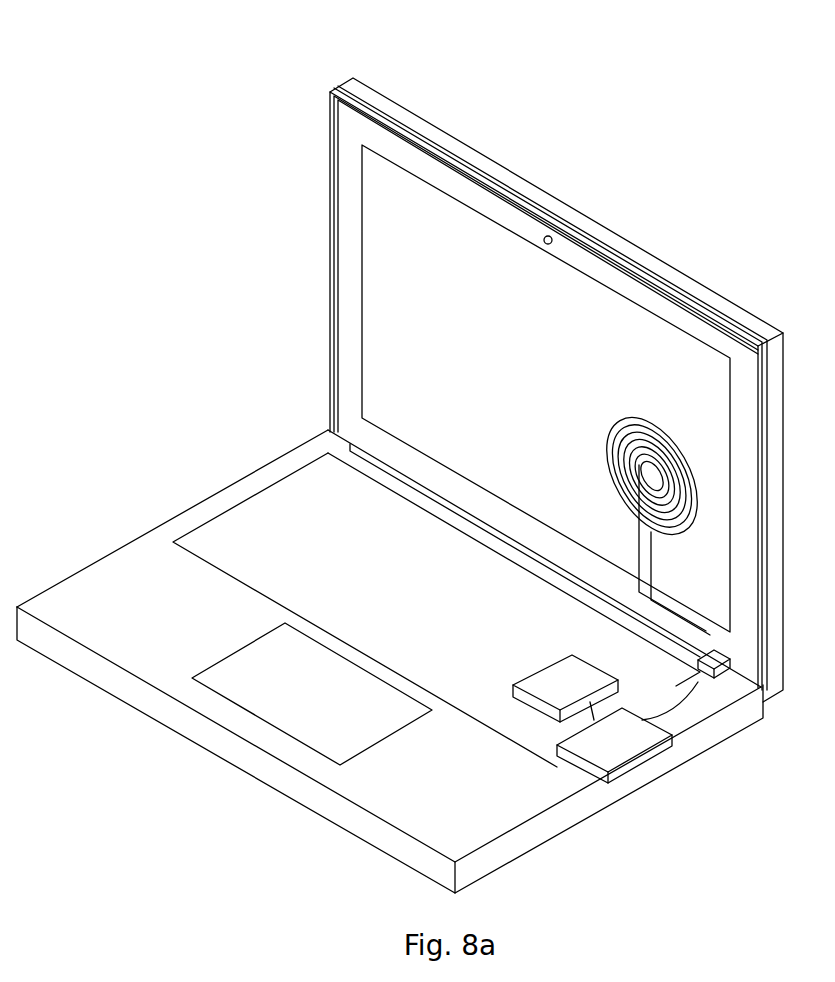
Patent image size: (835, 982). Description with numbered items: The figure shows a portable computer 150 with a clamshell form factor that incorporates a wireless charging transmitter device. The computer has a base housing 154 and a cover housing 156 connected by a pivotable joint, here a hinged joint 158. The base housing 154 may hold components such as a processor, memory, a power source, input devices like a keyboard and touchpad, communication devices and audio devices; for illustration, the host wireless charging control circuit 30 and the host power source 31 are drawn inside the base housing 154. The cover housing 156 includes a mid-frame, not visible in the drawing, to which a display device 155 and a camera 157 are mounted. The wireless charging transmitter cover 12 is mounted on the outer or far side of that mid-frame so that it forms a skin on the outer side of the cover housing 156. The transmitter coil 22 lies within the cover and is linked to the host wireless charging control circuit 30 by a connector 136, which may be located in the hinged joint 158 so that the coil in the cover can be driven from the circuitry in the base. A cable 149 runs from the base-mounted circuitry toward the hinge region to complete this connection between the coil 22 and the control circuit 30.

The portable computer 150 is at (408, 94).
The base housing 154 is at (126, 556).
The wireless charging transmitter cover 12 is at (537, 197).
The display device 155 is at (660, 343).
The cover housing 156 is at (613, 262).
The camera 157 is at (551, 236).
The transmitter coil 22 is at (511, 334).
The hinged joint 158 is at (447, 502).
The host power source 31 is at (551, 677).
The host wireless charging control circuit 30 is at (634, 764).
The cable 149 is at (670, 703).
The connector 136 is at (718, 690).